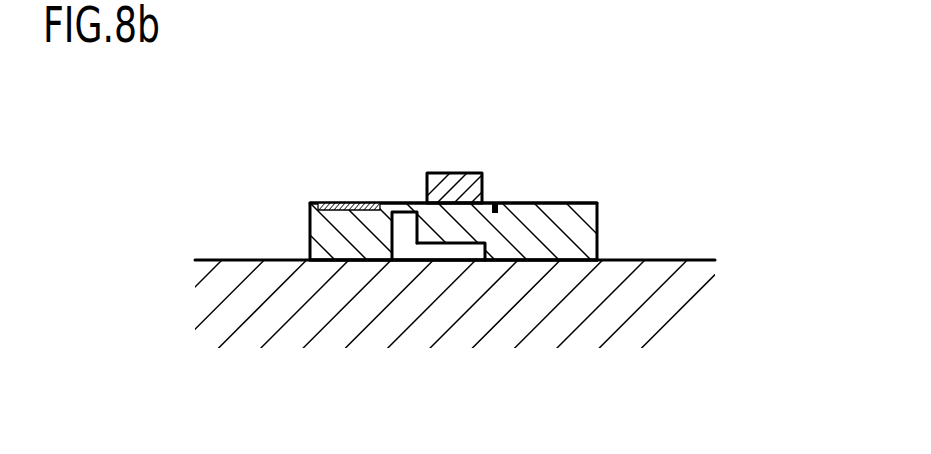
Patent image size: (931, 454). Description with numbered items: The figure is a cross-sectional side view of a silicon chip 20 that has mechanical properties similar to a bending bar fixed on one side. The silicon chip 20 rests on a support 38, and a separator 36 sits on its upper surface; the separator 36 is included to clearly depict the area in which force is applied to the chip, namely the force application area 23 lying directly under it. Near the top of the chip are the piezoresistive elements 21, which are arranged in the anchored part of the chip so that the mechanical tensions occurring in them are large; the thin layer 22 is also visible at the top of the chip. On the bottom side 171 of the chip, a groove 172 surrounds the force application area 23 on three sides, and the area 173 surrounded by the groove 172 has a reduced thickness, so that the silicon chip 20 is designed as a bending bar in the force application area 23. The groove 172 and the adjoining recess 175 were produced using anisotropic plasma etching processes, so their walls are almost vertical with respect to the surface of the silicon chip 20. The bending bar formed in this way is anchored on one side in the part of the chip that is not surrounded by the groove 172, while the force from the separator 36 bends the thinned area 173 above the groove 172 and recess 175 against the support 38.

The silicon chip 20 is at (616, 221).
The piezoresistive elements 21 is at (500, 204).
The electrode strip 22 is at (337, 203).
The force application area 23 is at (497, 203).
The separator 36 is at (440, 180).
The support 38 is at (667, 317).
The bottom side 171 is at (529, 277).
The groove 172 is at (402, 243).
The area surrounded by the groove 173 is at (443, 225).
The recess 175 is at (455, 250).